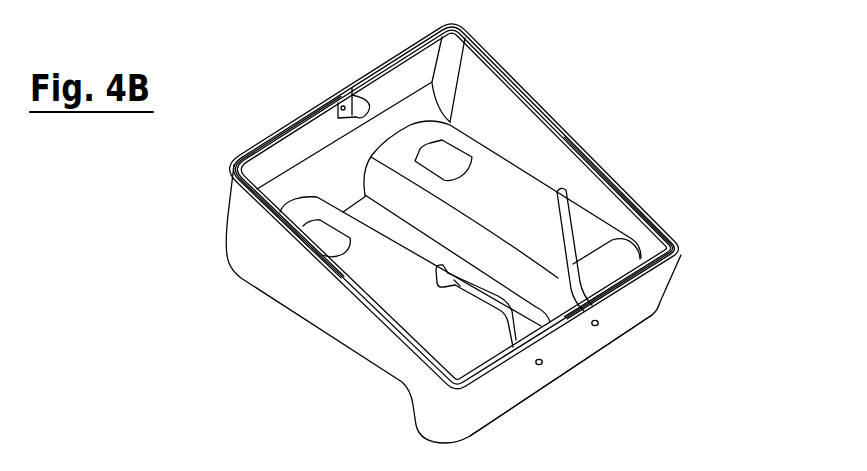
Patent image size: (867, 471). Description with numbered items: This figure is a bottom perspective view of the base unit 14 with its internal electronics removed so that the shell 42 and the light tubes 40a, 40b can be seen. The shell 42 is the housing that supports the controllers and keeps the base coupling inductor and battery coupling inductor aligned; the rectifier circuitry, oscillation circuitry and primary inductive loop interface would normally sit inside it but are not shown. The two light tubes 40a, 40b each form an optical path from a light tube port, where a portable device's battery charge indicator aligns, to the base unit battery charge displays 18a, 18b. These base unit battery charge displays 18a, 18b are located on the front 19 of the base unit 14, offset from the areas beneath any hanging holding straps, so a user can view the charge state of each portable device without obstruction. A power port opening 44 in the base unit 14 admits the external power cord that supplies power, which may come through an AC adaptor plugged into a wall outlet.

The base unit 14 is at (300, 292).
The shell 42 is at (498, 62).
The power port opening 44 is at (352, 88).
The light tube 40a is at (570, 241).
The light tube 40b is at (462, 282).
The base unit battery charge display 18a is at (598, 325).
The base unit battery charge display 18b is at (539, 366).
The front 19 is at (578, 347).